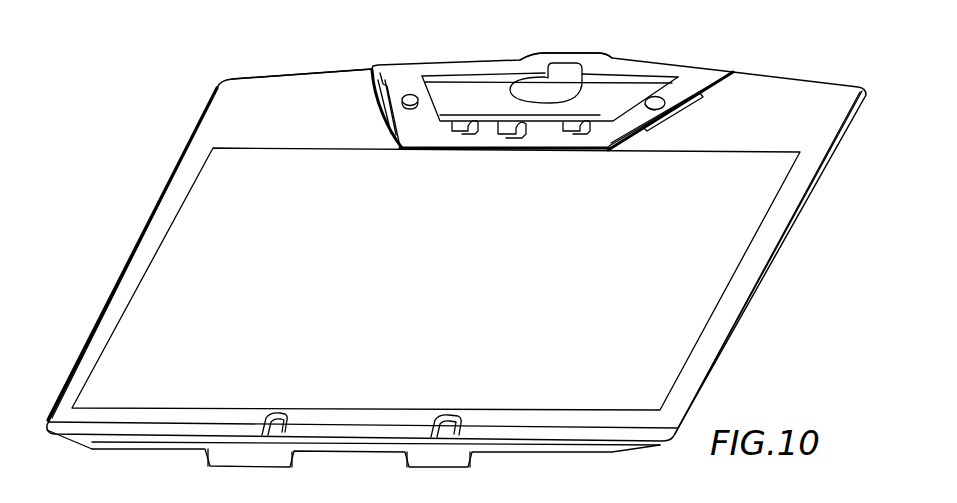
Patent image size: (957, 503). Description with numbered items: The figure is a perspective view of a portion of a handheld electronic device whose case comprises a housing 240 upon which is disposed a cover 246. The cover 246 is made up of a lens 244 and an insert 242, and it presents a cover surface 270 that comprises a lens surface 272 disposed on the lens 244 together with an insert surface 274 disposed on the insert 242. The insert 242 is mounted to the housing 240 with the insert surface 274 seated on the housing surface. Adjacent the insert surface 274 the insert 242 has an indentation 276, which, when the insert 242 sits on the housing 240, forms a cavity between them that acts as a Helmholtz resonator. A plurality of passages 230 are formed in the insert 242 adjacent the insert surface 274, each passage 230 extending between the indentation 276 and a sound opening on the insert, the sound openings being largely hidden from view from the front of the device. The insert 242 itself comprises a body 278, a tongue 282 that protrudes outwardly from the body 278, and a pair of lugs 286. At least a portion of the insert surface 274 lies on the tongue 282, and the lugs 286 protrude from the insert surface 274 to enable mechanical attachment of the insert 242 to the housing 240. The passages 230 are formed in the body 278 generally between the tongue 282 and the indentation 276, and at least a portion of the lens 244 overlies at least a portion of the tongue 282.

The passage 230 is at (510, 125).
The housing 240 is at (562, 499).
The insert 242 is at (531, 111).
The lens 244 is at (236, 77).
The cover 246 is at (318, 70).
The cover surface 270 is at (416, 136).
The lens surface 272 is at (224, 125).
The insert surface 274 is at (614, 138).
The indentation 276 is at (652, 87).
The body 278 is at (496, 62).
The tongue 282 is at (368, 69).
The lug 286 is at (410, 94).